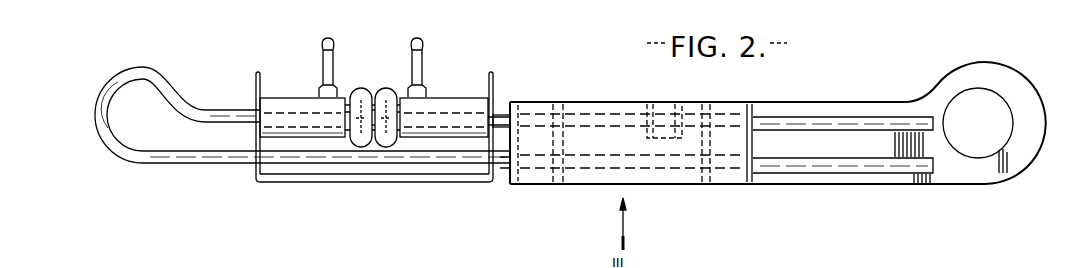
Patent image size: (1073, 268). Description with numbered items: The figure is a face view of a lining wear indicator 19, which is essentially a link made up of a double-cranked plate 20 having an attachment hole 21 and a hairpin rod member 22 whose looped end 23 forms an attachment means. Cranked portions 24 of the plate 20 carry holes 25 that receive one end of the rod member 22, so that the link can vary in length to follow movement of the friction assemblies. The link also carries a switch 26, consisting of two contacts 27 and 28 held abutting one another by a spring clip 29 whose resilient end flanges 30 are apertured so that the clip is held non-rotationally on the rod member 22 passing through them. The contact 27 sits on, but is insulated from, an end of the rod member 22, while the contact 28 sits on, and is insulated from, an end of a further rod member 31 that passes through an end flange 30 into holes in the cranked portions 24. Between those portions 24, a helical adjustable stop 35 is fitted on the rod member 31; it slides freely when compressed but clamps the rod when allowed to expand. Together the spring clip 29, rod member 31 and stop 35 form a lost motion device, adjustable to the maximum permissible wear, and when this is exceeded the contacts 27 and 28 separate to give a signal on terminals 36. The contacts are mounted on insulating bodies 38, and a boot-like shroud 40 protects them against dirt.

The wear indicator 19 is at (1023, 172).
The double-cranked plate 20 is at (982, 174).
The attachment hole 21 is at (957, 112).
The hairpin rod member 22 is at (175, 158).
The looped end 23 is at (157, 105).
The cranked portions 24 is at (512, 187).
The holes 25 is at (560, 137).
The switch 26 is at (447, 67).
The contact 27 is at (363, 93).
The contact 28 is at (392, 93).
The spring clip 29 is at (358, 181).
The resilient end flanges 30 is at (260, 78).
The further rod member 31 is at (503, 115).
The helical adjustable stop 35 is at (652, 102).
The terminals 36 is at (410, 43).
The insulating bodies 38 is at (303, 138).
The boot-like shroud 40 is at (387, 144).